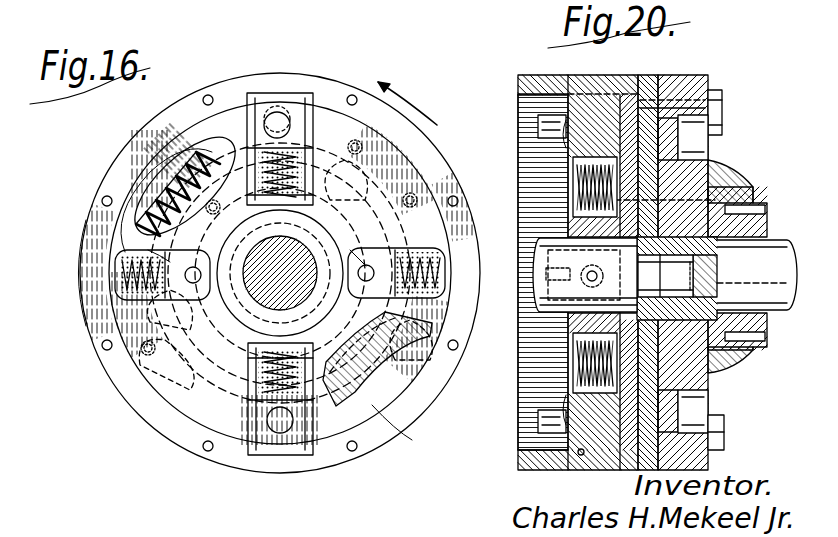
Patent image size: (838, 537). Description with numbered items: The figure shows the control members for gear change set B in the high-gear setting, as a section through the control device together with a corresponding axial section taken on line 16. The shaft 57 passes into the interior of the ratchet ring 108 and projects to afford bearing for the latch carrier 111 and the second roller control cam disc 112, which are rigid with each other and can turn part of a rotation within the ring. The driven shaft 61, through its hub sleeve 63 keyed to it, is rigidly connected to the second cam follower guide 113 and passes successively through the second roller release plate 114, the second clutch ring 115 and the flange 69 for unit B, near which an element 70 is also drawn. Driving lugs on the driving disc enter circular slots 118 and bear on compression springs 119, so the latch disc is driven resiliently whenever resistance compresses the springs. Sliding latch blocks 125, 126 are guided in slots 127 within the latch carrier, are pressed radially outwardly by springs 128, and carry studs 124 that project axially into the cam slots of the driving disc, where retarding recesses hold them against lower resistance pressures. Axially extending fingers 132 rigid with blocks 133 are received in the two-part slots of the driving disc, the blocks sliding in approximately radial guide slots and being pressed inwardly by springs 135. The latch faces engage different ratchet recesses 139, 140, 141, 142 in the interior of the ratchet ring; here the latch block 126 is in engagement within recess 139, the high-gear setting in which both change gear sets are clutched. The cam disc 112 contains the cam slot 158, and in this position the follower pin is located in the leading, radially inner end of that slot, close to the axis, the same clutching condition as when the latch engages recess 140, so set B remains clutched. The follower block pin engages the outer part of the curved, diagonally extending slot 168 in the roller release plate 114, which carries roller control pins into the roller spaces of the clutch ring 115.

In FIG. 20, the section line 16- 16 is at (506, 100).
In FIG. 16, the shaft 57 is at (262, 288).
In FIG. 20, the shaft 57 is at (550, 256).
In FIG. 20, the driven shaft 61 is at (717, 278).
In FIG. 20, the hub sleeve 63 is at (760, 222).
In FIG. 20, the flange 69 is at (720, 180).
In FIG. 20, the bearing block 70 is at (692, 130).
In FIG. 20, the ratchet ring 108 is at (592, 95).
In FIG. 16, the latch carrier 111 is at (395, 168).
In FIG. 20, the second roller control cam disc 112 is at (660, 78).
In FIG. 20, the second cam follower guide 113 is at (672, 95).
In FIG. 20, the second roller release plate 114 is at (678, 158).
In FIG. 20, the second clutch ring 115 is at (695, 88).
In FIG. 16, the circular slots 118 is at (160, 170).
In FIG. 16, the compression springs 119 is at (184, 152).
In FIG. 16, the studs 124 is at (292, 124).
In FIG. 20, the studs 124 is at (540, 125).
In FIG. 16, the sliding latch block 125 is at (278, 456).
In FIG. 20, the sliding latch block 125 is at (580, 402).
In FIG. 16, the sliding latch block 126 is at (258, 92).
In FIG. 20, the sliding latch block 126 is at (566, 140).
In FIG. 16, the slots 127 is at (262, 124).
In FIG. 16, the springs 128 is at (300, 198).
In FIG. 20, the springs 128 is at (575, 193).
In FIG. 16, the fingers 132 is at (253, 246).
In FIG. 16, the blocks 133 is at (281, 269).
In FIG. 16, the springs 135 is at (118, 265).
In FIG. 16, the ratchet recess 139 is at (300, 92).
In FIG. 20, the ratchet recess 139 is at (646, 78).
In FIG. 16, the ratchet recess 140 is at (98, 310).
In FIG. 20, the ratchet recess 140 is at (520, 288).
In FIG. 16, the ratchet recess 141 is at (298, 450).
In FIG. 20, the ratchet recess 141 is at (580, 456).
In FIG. 16, the ratchet recess 142 is at (445, 280).
In FIG. 16, the cam slot 158 is at (380, 405).
In FIG. 20, the cam slot 158 is at (724, 432).
In FIG. 20, the slot 168 is at (722, 100).